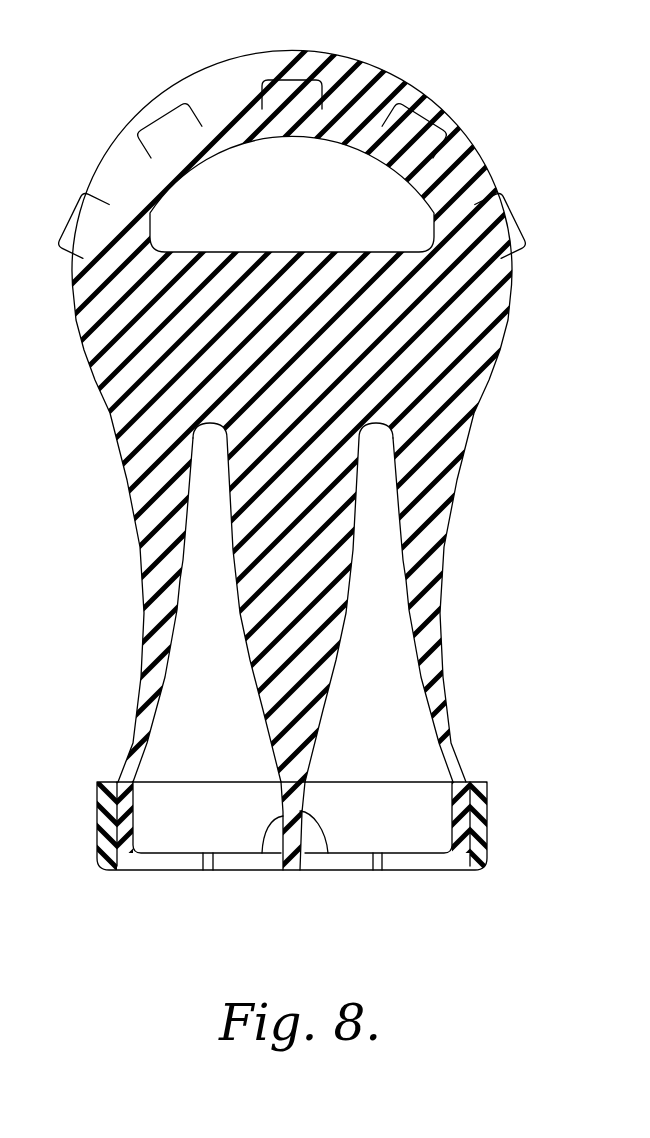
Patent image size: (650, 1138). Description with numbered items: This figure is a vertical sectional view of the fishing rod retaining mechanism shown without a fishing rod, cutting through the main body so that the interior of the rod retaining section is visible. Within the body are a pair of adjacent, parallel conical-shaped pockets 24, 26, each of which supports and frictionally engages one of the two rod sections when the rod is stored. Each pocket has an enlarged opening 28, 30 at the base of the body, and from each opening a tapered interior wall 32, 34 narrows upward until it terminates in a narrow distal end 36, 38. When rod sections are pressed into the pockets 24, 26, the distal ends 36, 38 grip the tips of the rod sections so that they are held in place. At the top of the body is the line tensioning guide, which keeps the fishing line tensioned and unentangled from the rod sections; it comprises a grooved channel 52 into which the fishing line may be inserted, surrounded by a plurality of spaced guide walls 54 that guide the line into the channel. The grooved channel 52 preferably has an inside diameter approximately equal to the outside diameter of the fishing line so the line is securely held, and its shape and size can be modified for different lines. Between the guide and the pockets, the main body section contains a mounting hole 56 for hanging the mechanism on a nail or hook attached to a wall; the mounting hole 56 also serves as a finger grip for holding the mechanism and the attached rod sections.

The conical-shaped pocket 24 is at (182, 807).
The conical-shaped pocket 26 is at (420, 822).
The enlarged opening 28 is at (280, 817).
The enlarged opening 30 is at (300, 810).
The tapered interior wall 32 is at (170, 635).
The tapered interior wall 34 is at (343, 635).
The narrow distal end 36 is at (210, 427).
The narrow distal end 38 is at (377, 425).
The grooved channel 52 is at (233, 108).
The spaced guide walls 54 is at (157, 130).
The mounting hole 56 is at (292, 194).